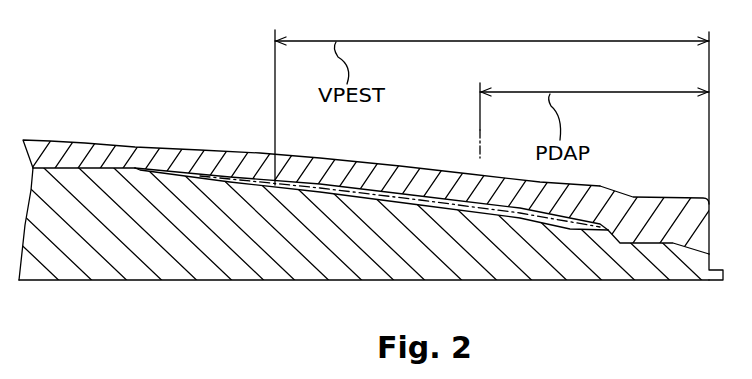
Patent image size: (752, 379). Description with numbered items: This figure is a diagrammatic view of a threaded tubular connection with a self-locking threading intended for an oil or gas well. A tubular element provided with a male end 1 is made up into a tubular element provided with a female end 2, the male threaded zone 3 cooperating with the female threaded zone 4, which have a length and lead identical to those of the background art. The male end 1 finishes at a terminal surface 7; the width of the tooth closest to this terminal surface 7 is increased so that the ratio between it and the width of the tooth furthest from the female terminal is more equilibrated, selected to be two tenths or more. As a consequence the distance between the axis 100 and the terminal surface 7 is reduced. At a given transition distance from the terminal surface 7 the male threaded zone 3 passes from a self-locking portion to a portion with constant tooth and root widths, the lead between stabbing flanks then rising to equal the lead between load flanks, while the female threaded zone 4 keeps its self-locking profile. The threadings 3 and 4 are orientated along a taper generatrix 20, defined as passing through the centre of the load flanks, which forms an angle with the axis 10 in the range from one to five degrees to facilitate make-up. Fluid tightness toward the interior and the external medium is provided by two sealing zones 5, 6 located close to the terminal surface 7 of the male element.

The male end 1 is at (67, 237).
The female end 2 is at (78, 152).
The male threaded zone 3 is at (332, 196).
The female threaded zone 4 is at (301, 175).
The sealing zone 5 is at (626, 243).
The sealing zone 6 is at (646, 236).
The terminal surface 7 is at (720, 270).
The axis 10 is at (245, 280).
The taper generatrix 20 is at (502, 218).
The axis 100 is at (479, 126).